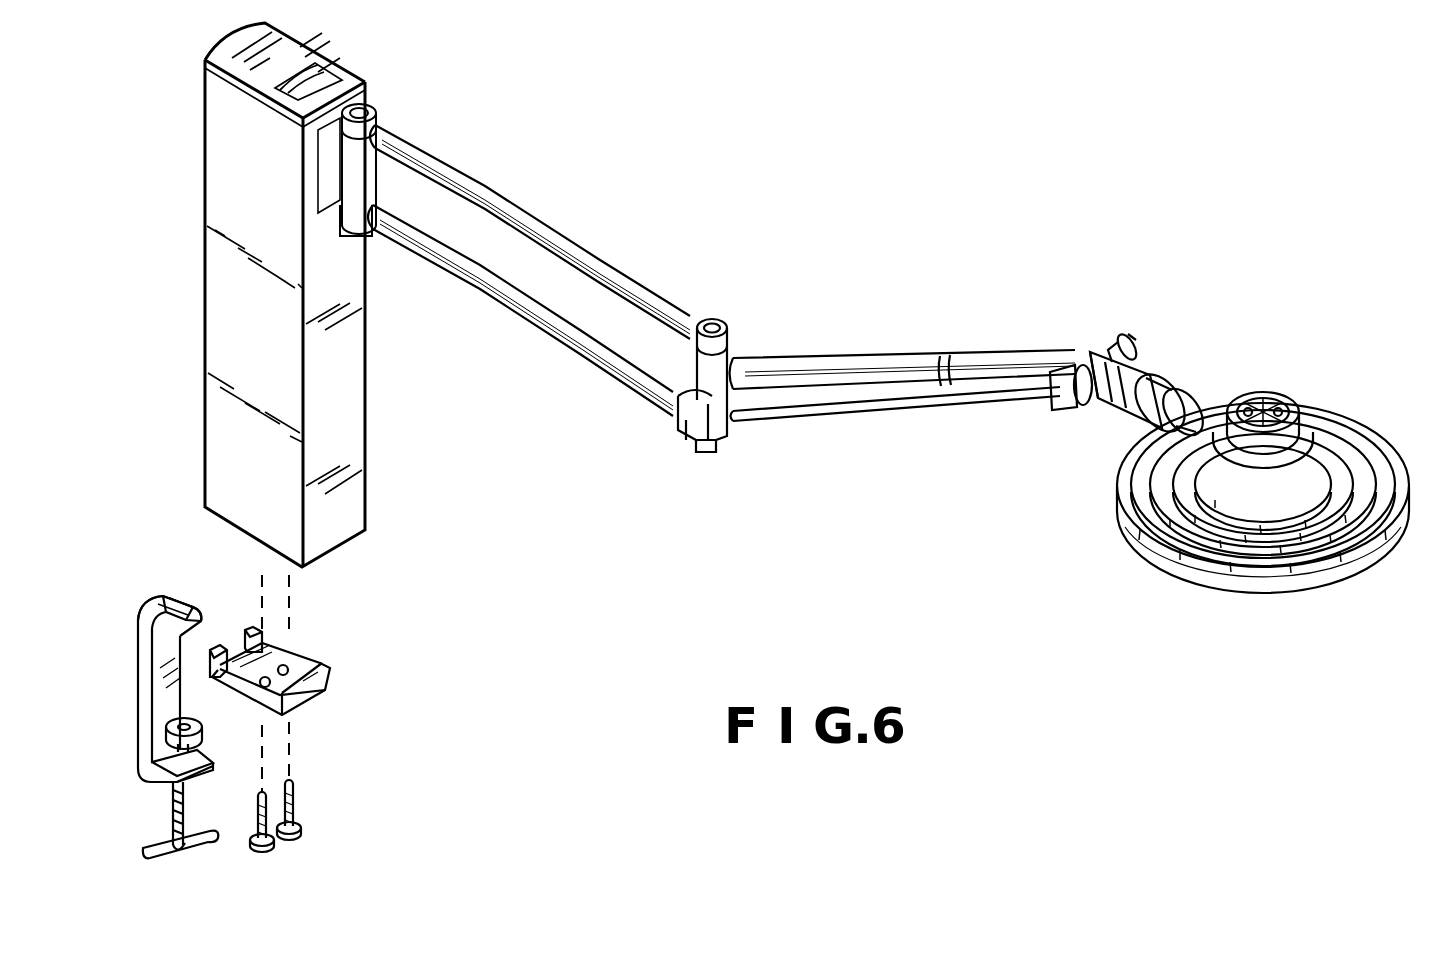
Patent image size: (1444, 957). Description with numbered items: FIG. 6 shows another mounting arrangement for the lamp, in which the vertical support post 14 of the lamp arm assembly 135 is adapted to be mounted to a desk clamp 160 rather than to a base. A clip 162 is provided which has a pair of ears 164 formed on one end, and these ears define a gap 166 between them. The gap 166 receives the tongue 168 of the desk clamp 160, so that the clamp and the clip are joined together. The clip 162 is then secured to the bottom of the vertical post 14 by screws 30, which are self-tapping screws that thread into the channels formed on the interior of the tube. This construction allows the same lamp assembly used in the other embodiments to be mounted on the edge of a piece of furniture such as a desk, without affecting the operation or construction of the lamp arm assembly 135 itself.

The support post 14 is at (363, 358).
The articulated arm assembly 135 is at (882, 492).
The desk clamp 160 is at (137, 713).
The clip 162 is at (257, 639).
The ears 164 is at (250, 633).
The gap 166 is at (215, 645).
The tongue 168 is at (165, 598).
The screws 30 is at (267, 850).